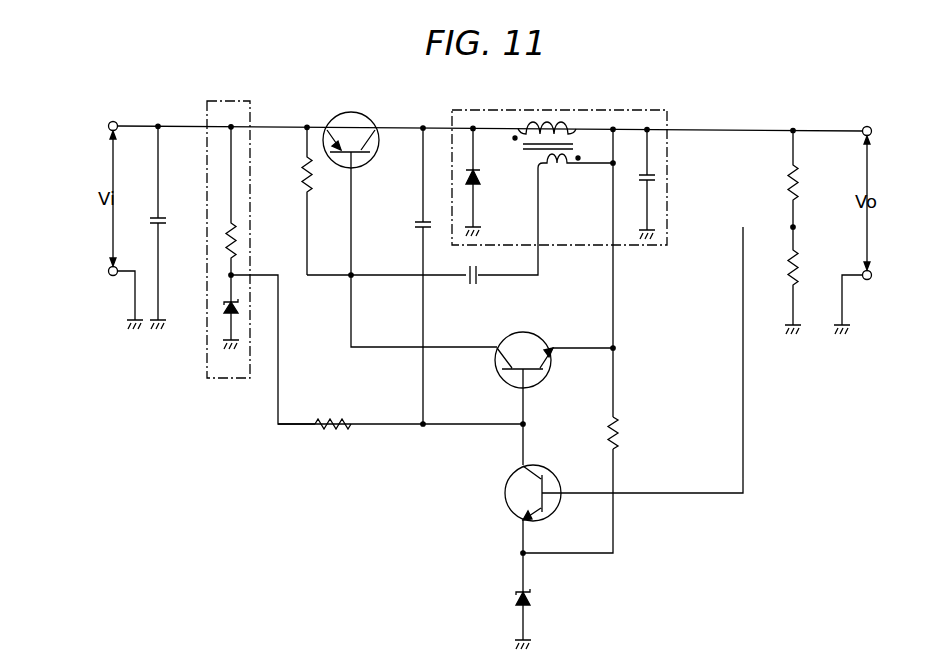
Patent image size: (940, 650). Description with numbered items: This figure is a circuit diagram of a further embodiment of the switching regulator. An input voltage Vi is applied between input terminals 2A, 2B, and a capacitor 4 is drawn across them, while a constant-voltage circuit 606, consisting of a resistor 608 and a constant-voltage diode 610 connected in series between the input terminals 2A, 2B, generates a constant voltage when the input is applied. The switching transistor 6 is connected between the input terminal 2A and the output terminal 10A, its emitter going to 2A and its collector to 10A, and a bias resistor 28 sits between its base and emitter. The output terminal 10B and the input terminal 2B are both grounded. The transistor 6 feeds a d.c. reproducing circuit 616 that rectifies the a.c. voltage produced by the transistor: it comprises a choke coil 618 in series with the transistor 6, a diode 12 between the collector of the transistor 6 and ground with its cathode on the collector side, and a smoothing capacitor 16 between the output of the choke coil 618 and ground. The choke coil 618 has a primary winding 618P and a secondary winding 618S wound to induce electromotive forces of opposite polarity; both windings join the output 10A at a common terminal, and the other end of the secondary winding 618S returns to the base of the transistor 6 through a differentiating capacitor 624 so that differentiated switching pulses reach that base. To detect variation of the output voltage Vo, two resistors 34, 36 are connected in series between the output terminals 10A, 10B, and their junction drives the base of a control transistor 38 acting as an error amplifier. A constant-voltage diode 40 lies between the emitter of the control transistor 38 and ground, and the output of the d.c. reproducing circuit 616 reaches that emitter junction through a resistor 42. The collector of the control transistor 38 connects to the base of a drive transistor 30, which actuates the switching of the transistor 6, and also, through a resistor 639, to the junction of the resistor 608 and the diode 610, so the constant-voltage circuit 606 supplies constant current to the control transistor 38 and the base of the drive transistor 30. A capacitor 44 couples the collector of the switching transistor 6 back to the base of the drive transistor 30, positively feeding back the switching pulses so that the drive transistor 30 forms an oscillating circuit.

The input terminal 2A is at (108, 126).
The input terminal 2B is at (108, 271).
The input capacitor 4 is at (150, 222).
The switching transistor 6 is at (338, 118).
The constant-voltage circuit 606 is at (215, 378).
The resistor 608 is at (240, 242).
The constant-voltage diode 610 is at (226, 307).
The bias resistor 28 is at (311, 190).
The capacitor 44 is at (416, 224).
The d.c. reproducing circuit 616 is at (630, 246).
The choke coil 618 is at (523, 148).
The primary winding 618P is at (548, 122).
The secondary winding 618S is at (564, 167).
The diode 12 is at (480, 186).
The smoothing capacitor 16 is at (643, 181).
The differentiating capacitor 624 is at (478, 282).
The drive transistor 30 is at (498, 378).
The control transistor 38 is at (506, 478).
The constant-voltage diode 40 is at (510, 598).
The resistor 42 is at (619, 432).
The resistor 639 is at (332, 430).
The resistor 34 is at (785, 183).
The resistor 36 is at (798, 270).
The output terminal 10A is at (871, 128).
The output terminal 10B is at (871, 274).